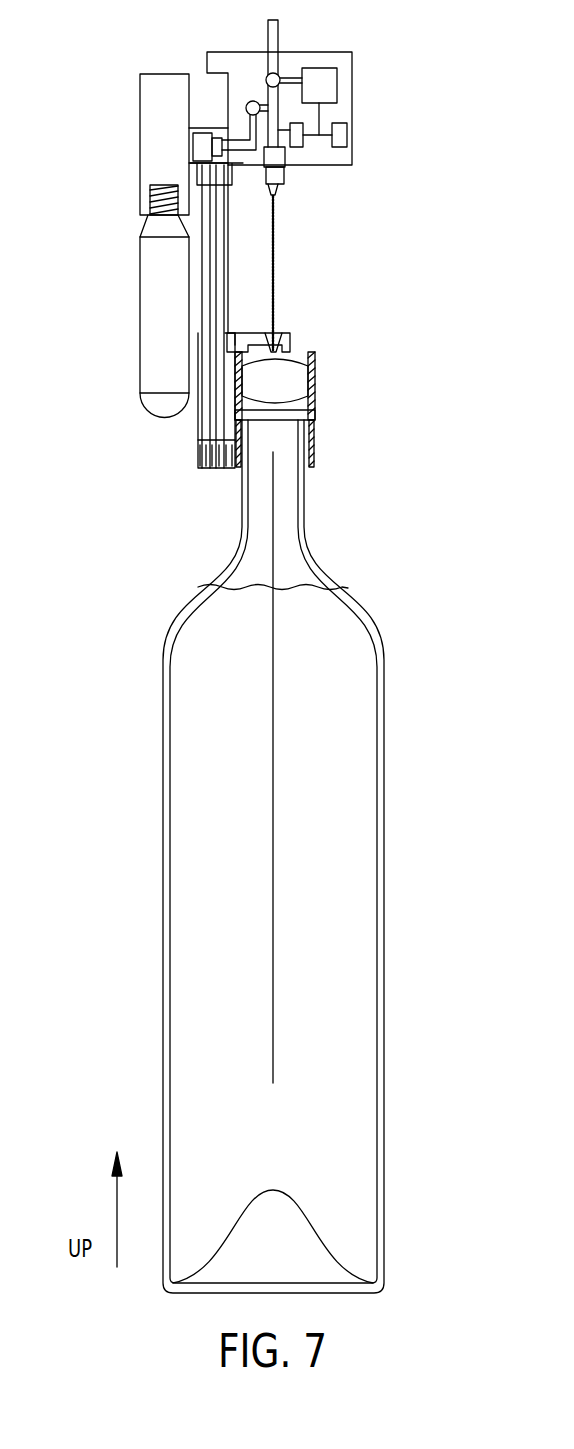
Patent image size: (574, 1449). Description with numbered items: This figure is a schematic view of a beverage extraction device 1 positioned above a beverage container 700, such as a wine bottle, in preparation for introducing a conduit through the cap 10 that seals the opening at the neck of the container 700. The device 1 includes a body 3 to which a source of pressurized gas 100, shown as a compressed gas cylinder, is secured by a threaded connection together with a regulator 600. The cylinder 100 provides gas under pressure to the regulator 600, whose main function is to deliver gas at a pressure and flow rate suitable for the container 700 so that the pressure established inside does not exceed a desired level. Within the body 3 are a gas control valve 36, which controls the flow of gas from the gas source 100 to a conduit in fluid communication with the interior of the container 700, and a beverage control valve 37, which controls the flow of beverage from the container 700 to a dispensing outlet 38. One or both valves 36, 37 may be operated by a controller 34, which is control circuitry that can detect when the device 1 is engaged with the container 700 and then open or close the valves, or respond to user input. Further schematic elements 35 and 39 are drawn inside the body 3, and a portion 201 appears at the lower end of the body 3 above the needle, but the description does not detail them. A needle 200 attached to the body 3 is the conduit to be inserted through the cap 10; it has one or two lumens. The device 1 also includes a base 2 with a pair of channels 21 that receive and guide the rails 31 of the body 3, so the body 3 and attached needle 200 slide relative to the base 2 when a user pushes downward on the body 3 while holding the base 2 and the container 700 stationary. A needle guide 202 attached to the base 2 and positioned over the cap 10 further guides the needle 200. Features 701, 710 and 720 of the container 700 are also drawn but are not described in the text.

The beverage extraction device 1 is at (96, 70).
The body 3 is at (352, 63).
The dispensing outlet 38 is at (280, 33).
The beverage control valve 37 is at (266, 76).
The gas control valve 36 is at (244, 107).
The controller 34 is at (330, 93).
The power supply 35 is at (340, 130).
The sensor 39 is at (300, 142).
The injector head 201 is at (288, 178).
The needle 200 is at (280, 257).
The regulator 600 is at (152, 145).
The source of pressurized gas 100 is at (152, 310).
The base 2 is at (198, 445).
The rails 31 is at (223, 297).
The channels 21 is at (207, 470).
The cap 10 is at (318, 383).
The needle guide 202 is at (290, 337).
The beverage container 700 is at (385, 803).
The bottle body 710 is at (355, 968).
The liquid level 720 is at (295, 556).
The bottle axis 701 is at (273, 727).